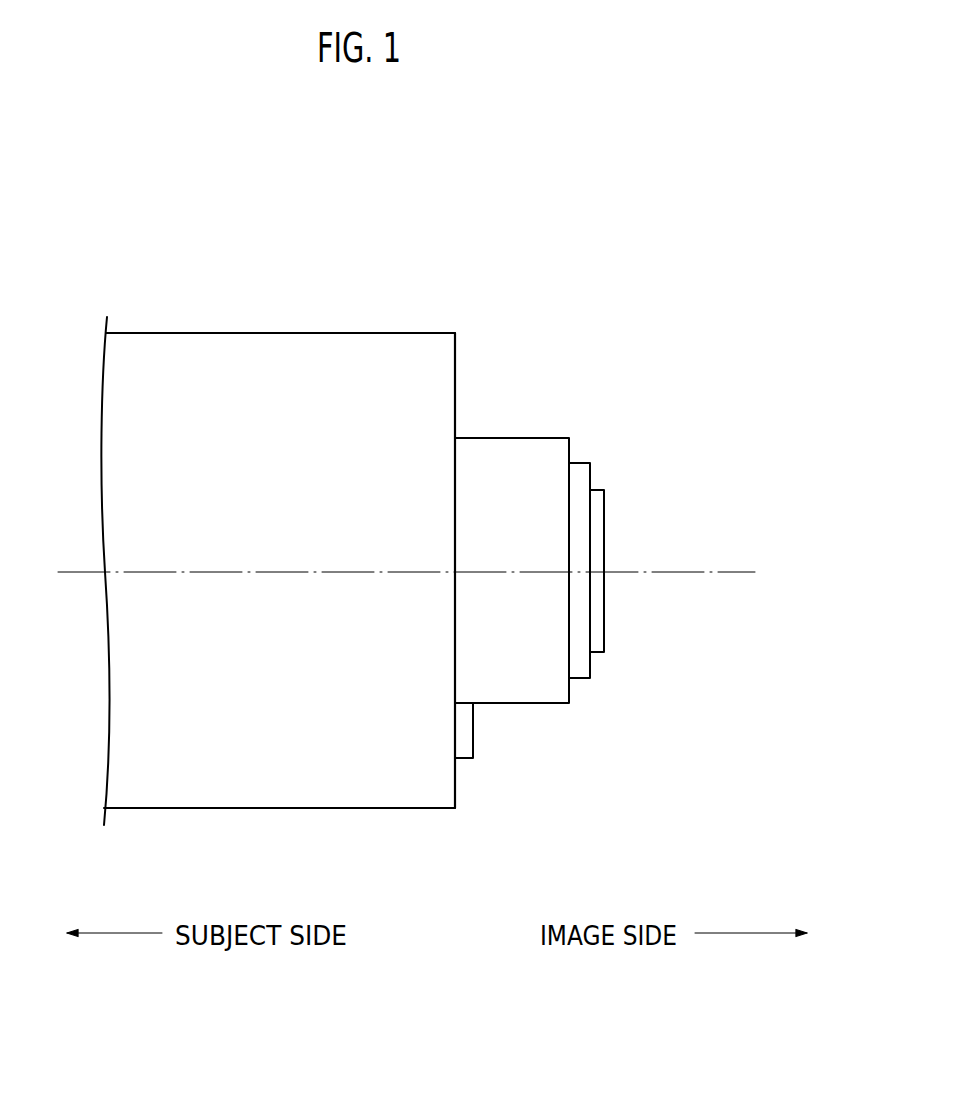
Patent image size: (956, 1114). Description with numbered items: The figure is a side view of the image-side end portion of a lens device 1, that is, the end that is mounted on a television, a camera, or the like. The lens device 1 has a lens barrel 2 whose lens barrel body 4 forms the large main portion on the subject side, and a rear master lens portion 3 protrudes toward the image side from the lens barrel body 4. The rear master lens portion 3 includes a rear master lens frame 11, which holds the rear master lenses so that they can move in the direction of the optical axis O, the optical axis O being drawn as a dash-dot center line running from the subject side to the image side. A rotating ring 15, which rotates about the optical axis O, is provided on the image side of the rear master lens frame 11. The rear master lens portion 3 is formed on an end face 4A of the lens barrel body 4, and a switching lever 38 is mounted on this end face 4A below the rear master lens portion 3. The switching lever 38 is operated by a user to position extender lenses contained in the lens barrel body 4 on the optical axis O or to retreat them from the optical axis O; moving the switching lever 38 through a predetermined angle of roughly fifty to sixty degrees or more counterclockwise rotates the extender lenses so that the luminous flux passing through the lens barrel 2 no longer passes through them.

The lens device 1 is at (502, 273).
The lens barrel 2 is at (175, 332).
The rear master lens portion 3 is at (543, 390).
The lens barrel body 4 is at (340, 300).
The end face 4A is at (455, 370).
The rear master lens frame 11 is at (595, 517).
The rotating ring 15 is at (577, 475).
The switching lever 38 is at (465, 735).
The optical axis O is at (428, 574).